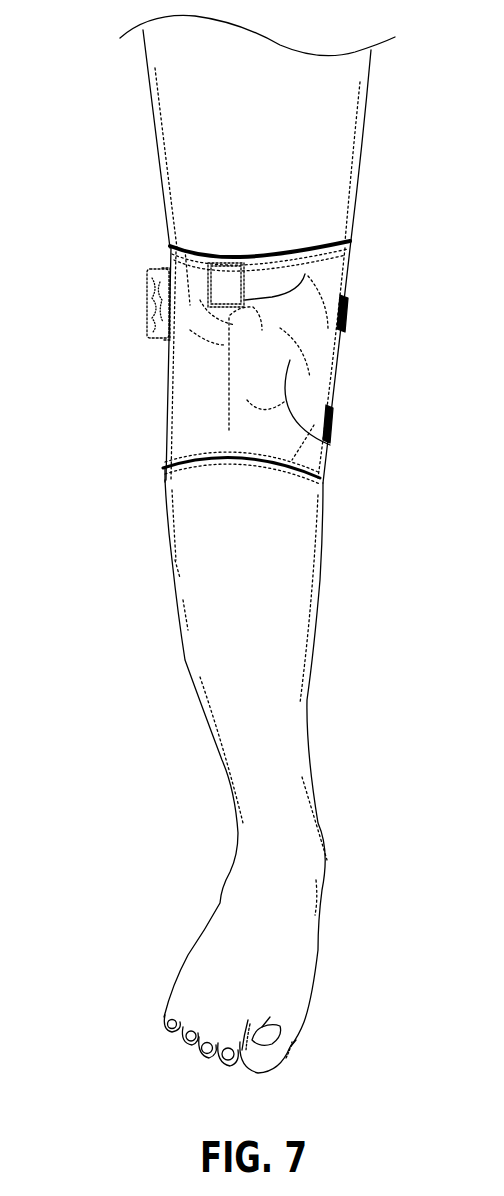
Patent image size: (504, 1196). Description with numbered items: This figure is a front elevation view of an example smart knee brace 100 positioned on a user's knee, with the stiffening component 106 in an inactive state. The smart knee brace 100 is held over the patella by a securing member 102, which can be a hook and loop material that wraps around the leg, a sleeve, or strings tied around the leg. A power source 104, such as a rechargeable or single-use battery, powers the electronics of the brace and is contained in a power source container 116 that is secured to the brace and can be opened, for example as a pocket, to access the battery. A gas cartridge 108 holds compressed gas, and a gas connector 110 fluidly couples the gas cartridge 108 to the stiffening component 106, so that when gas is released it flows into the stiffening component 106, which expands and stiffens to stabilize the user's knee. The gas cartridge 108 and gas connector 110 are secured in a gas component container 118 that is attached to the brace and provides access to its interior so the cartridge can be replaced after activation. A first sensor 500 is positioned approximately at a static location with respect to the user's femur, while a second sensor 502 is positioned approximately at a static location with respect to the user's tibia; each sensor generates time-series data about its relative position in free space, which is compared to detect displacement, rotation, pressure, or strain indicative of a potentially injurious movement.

The smart knee brace 100 is at (138, 390).
The securing member 102 is at (340, 330).
The power source 104 is at (300, 240).
The stiffening component 106 is at (167, 490).
The gas cartridge 108 is at (160, 323).
The gas connector 110 is at (158, 268).
The power source container 116 is at (232, 277).
The gas component container 118 is at (148, 322).
The first sensor 500 is at (182, 233).
The second sensor 502 is at (162, 430).